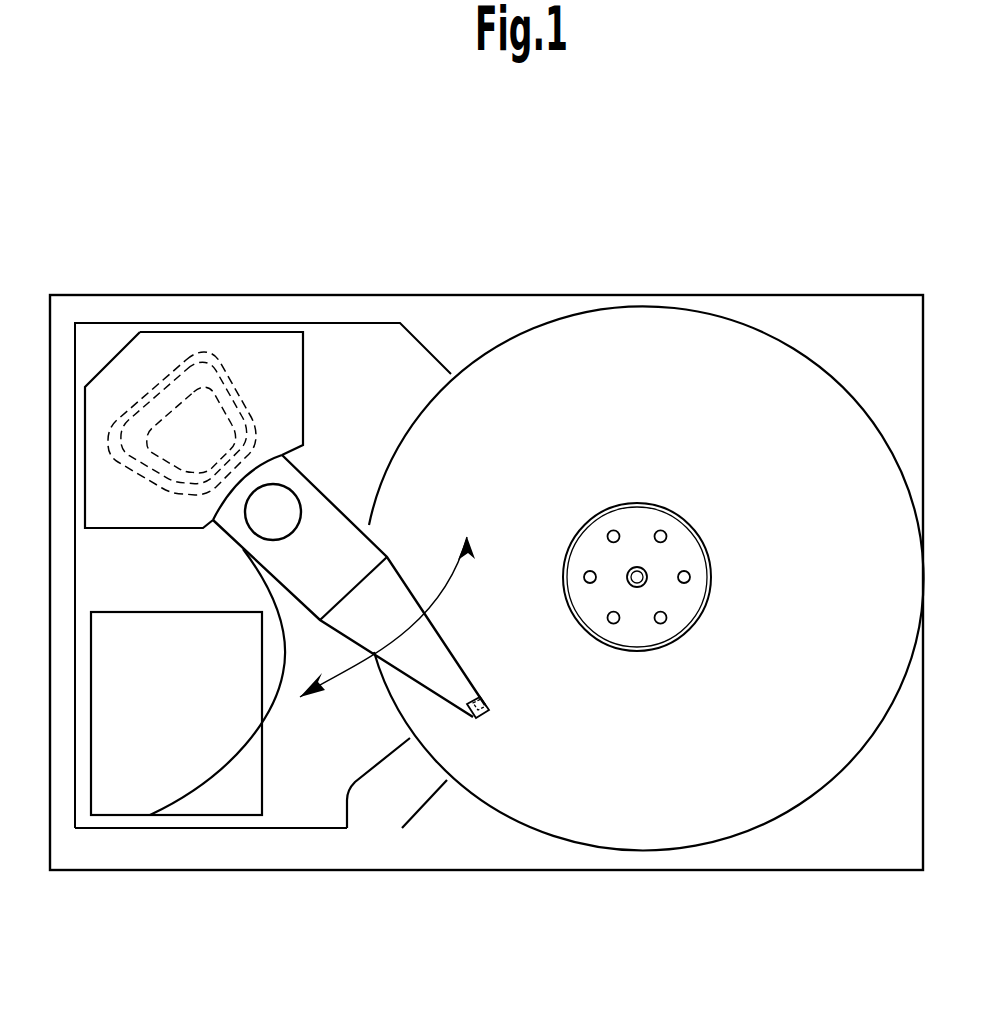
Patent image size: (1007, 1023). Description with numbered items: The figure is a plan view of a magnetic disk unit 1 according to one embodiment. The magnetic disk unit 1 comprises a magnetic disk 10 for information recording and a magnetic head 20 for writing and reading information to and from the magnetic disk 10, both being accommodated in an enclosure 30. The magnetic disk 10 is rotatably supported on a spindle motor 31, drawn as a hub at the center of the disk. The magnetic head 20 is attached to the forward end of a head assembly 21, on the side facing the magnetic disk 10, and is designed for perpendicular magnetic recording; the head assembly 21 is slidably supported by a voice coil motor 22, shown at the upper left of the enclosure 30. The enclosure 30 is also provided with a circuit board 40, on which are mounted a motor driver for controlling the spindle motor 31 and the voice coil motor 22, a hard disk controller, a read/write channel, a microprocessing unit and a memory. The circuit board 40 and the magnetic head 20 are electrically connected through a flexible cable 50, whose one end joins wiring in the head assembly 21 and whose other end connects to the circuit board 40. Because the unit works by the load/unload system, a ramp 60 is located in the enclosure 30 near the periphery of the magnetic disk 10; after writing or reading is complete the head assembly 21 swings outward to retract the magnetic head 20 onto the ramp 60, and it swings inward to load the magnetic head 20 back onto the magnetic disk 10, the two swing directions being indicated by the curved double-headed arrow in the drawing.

The magnetic disk unit 1 is at (418, 207).
The magnetic disk 10 is at (628, 342).
The magnetic head 20 is at (488, 711).
The head assembly 21 is at (320, 530).
The voice coil motor 22 is at (277, 443).
The enclosure 30 is at (840, 313).
The spindle motor 31 is at (642, 525).
The circuit board 40 is at (155, 633).
The flexible cable 50 is at (237, 758).
The ramp 60 is at (415, 798).